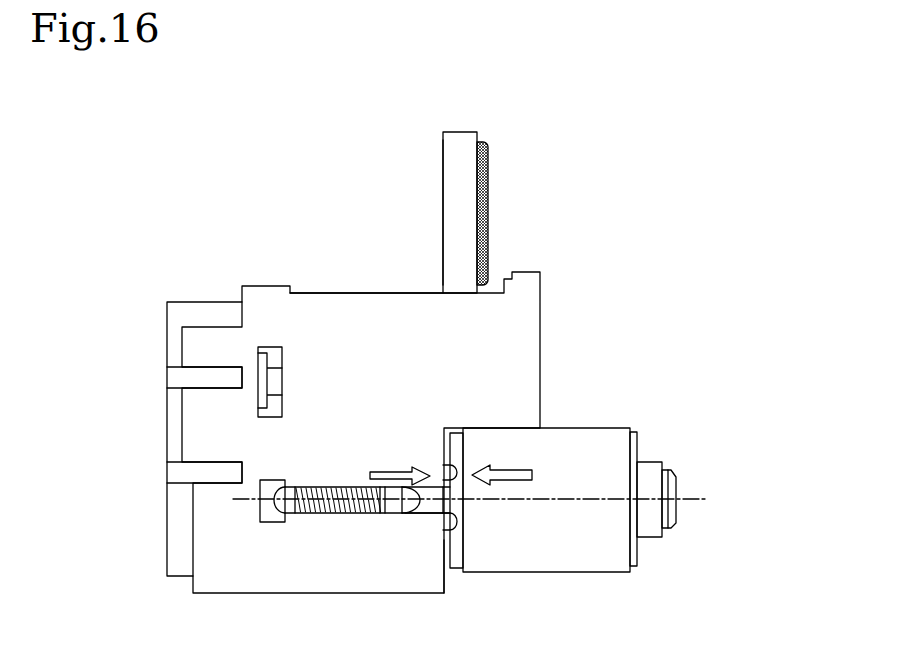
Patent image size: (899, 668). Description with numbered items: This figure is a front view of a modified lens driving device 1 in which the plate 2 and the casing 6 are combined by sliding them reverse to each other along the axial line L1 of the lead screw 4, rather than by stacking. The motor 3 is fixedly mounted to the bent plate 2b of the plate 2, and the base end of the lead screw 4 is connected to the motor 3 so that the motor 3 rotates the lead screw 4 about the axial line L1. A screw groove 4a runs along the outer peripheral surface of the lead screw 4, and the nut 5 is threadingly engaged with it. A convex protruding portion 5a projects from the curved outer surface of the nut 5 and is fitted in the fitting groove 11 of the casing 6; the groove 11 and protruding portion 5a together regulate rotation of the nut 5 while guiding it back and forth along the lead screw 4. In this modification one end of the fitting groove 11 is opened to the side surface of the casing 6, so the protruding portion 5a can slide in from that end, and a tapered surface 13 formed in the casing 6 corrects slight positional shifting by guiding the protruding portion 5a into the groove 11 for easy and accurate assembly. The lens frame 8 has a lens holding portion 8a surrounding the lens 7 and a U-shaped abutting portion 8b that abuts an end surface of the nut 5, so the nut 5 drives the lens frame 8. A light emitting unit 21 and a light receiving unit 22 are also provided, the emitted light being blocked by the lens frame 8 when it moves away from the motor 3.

The lens driving device 1 is at (632, 231).
The plate 2 is at (175, 297).
The bent plate 2b is at (462, 540).
The motor 3 is at (603, 555).
The lead screw 4 is at (312, 518).
The screw groove 4a is at (343, 518).
The nut 5 is at (427, 515).
The protruding portion 5a is at (405, 518).
The casing 6 is at (337, 289).
The lens 7 is at (490, 205).
The lens frame 8 is at (440, 123).
The lens holding portion 8a is at (455, 200).
The abutting portion 8b is at (387, 484).
The fitting groove 11 is at (345, 486).
The tapered surface 13 is at (446, 468).
The light emitting unit 21 is at (177, 473).
The light receiving unit 22 is at (175, 378).
The axial line L1 is at (685, 498).